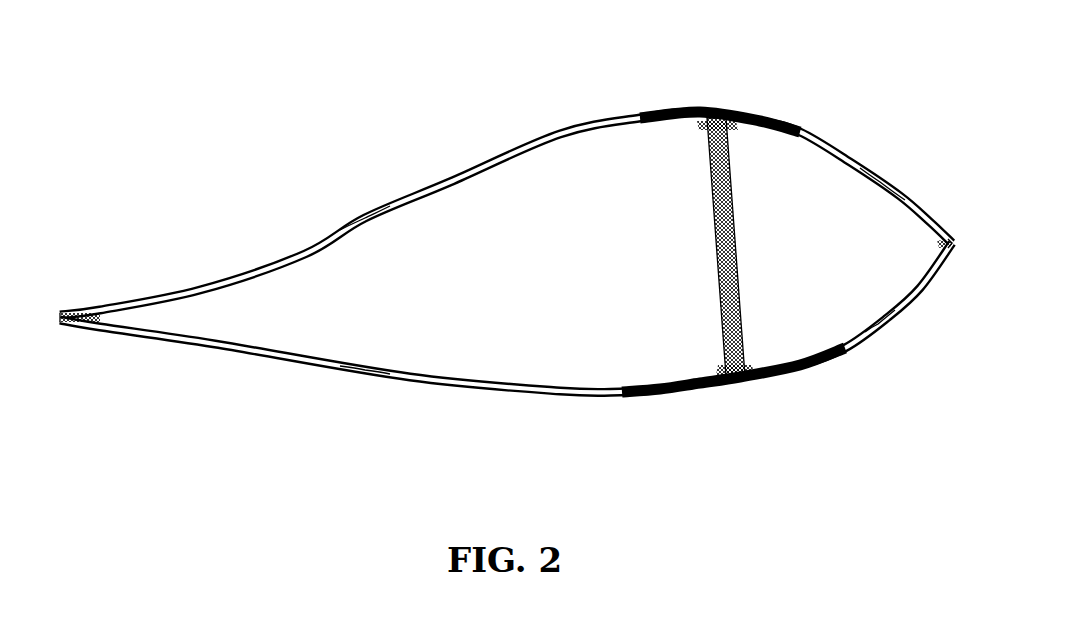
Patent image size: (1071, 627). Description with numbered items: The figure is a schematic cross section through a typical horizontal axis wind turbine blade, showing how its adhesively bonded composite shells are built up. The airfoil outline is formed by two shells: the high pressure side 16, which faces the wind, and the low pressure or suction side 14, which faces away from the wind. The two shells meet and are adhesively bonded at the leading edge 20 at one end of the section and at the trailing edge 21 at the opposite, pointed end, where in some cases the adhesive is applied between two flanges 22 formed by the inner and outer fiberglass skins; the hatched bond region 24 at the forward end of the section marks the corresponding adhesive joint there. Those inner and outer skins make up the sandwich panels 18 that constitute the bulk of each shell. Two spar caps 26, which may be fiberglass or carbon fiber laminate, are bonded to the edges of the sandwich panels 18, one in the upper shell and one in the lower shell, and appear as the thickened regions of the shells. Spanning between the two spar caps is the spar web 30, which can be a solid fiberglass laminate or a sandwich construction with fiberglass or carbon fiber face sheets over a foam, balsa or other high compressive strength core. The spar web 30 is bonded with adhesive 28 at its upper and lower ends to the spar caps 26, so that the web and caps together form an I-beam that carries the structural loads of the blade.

The low pressure side 14 is at (612, 394).
The high pressure side 16 is at (530, 142).
The sandwich panels 18 is at (365, 218).
The leading edge 20 is at (951, 248).
The trailing edge 21 is at (59, 322).
The flanges 22 is at (940, 245).
The leading edge bond 24 is at (100, 288).
The spar caps 26 is at (705, 112).
The adhesive 28 is at (704, 120).
The spar web 30 is at (740, 275).